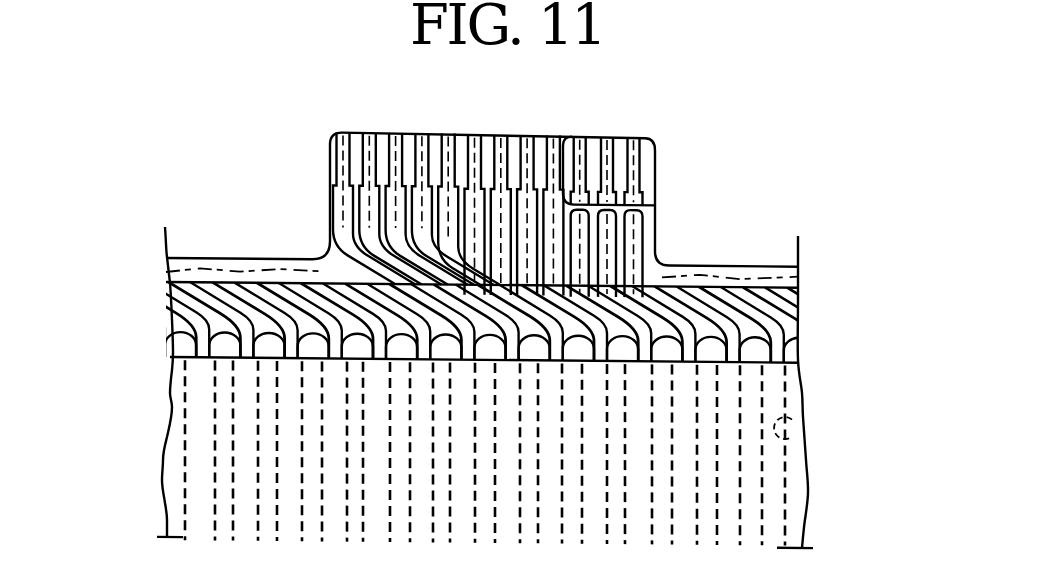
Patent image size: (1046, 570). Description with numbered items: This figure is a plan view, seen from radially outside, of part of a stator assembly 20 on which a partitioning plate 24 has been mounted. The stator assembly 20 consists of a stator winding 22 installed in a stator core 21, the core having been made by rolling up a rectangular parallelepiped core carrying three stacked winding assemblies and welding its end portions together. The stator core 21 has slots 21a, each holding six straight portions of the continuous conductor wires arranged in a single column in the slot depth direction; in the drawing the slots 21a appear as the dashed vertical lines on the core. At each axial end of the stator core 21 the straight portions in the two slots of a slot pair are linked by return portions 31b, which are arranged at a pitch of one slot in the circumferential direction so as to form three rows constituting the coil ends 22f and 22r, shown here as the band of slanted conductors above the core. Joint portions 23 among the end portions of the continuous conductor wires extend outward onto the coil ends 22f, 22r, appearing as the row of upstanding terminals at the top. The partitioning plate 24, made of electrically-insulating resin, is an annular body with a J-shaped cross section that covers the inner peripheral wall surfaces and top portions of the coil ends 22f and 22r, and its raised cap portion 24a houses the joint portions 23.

The stator assembly 20 is at (146, 150).
The stator core 21 is at (810, 469).
The slot 21a is at (792, 411).
The stator winding 22 is at (458, 317).
The coil end 22f is at (458, 321).
The coil end 22r is at (161, 299).
The joint portion 23 is at (335, 142).
The partitioning plate 24 is at (726, 258).
The cap portion 24a is at (657, 148).
The return portion 31b is at (778, 316).